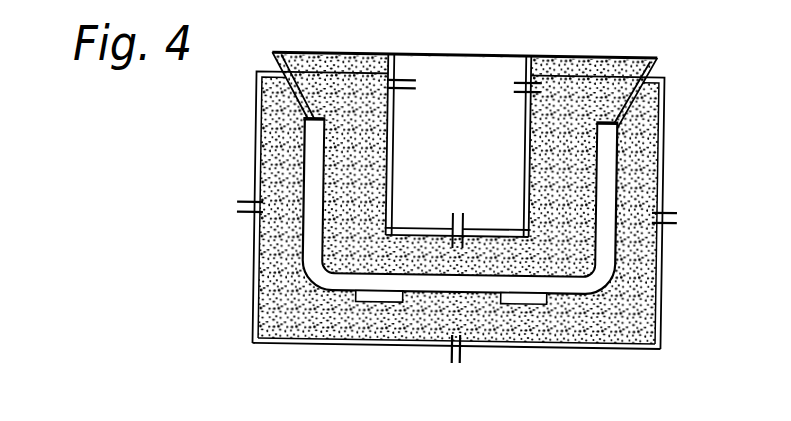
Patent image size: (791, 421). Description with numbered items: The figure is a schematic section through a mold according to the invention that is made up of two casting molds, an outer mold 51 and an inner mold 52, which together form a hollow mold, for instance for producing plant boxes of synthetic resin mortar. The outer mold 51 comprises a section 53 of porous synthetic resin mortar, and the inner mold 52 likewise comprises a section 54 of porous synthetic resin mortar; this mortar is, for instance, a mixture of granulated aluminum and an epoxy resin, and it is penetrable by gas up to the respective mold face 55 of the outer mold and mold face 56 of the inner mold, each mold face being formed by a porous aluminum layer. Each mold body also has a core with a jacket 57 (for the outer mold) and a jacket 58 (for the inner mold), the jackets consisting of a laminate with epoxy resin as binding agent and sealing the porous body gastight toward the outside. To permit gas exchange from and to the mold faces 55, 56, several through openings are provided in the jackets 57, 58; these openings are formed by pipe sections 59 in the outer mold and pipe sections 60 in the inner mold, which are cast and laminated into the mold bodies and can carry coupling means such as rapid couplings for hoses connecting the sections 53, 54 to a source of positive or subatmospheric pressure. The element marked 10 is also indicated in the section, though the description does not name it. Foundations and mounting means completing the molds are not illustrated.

The sensor probe 10 is at (464, 227).
The outer mold 51 is at (667, 282).
The inner mold 52 is at (577, 52).
The section of porous synthetic resin mortar 53 is at (592, 348).
The section of porous synthetic resin mortar 54 is at (327, 50).
The mold face 55 is at (333, 293).
The mold face 56 is at (413, 227).
The jacket 57 is at (527, 349).
The jacket 58 is at (390, 127).
The pipe sections 59 is at (240, 202).
The pipe sections 60 is at (407, 78).